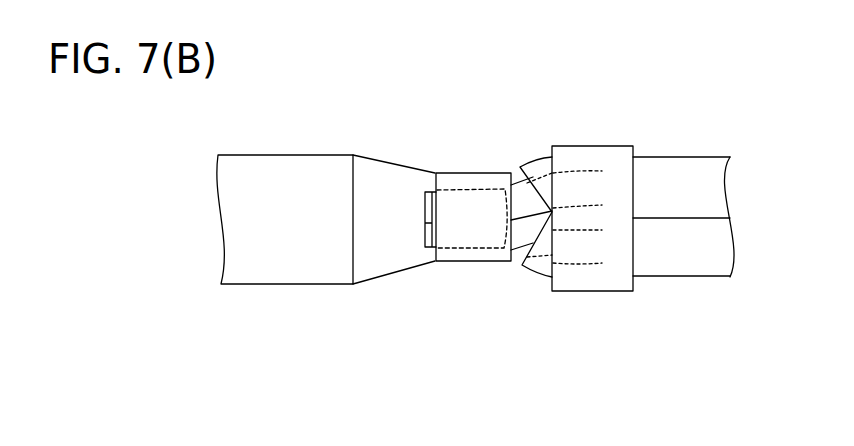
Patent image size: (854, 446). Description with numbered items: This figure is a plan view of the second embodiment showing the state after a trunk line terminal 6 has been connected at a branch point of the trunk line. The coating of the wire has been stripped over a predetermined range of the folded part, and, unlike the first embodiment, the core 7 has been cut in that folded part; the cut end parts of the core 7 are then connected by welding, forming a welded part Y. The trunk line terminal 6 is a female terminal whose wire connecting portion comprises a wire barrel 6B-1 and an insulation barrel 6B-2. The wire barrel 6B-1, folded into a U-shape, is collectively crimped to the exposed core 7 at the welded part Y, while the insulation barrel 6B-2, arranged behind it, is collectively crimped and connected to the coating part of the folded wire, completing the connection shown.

The trunk line terminal 6 is at (251, 300).
The core 7 is at (424, 206).
The wire barrel 6B-1 is at (466, 262).
The insulation barrel 6B-2 is at (593, 282).
The welded part Y is at (470, 193).